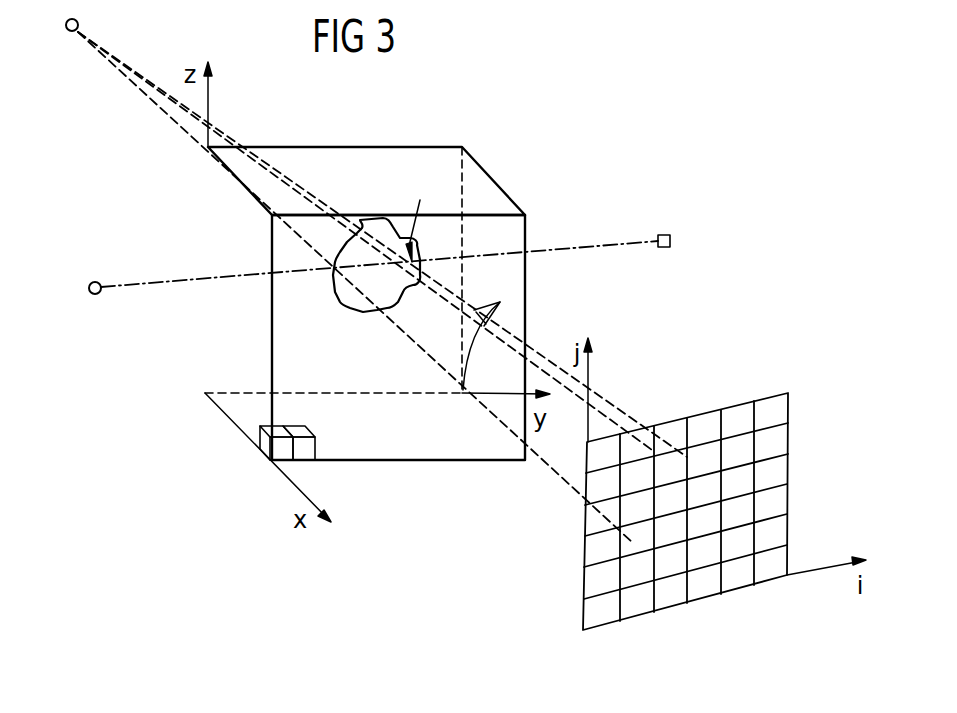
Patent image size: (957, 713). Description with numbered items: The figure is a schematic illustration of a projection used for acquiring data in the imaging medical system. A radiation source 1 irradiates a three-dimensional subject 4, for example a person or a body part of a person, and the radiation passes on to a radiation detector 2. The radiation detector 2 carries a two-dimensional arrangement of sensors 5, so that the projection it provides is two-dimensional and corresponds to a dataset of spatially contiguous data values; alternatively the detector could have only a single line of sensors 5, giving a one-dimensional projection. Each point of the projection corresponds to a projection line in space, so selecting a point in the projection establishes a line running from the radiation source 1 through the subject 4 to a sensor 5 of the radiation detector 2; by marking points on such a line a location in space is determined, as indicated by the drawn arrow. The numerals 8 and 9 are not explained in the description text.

The radiation source 1 is at (72, 31).
The radiation detector 2 is at (585, 625).
The three-dimensional subject 4 is at (364, 313).
The sensors 5 is at (670, 230).
The projection direction arrow 8 is at (468, 307).
The voxel 9 is at (290, 461).